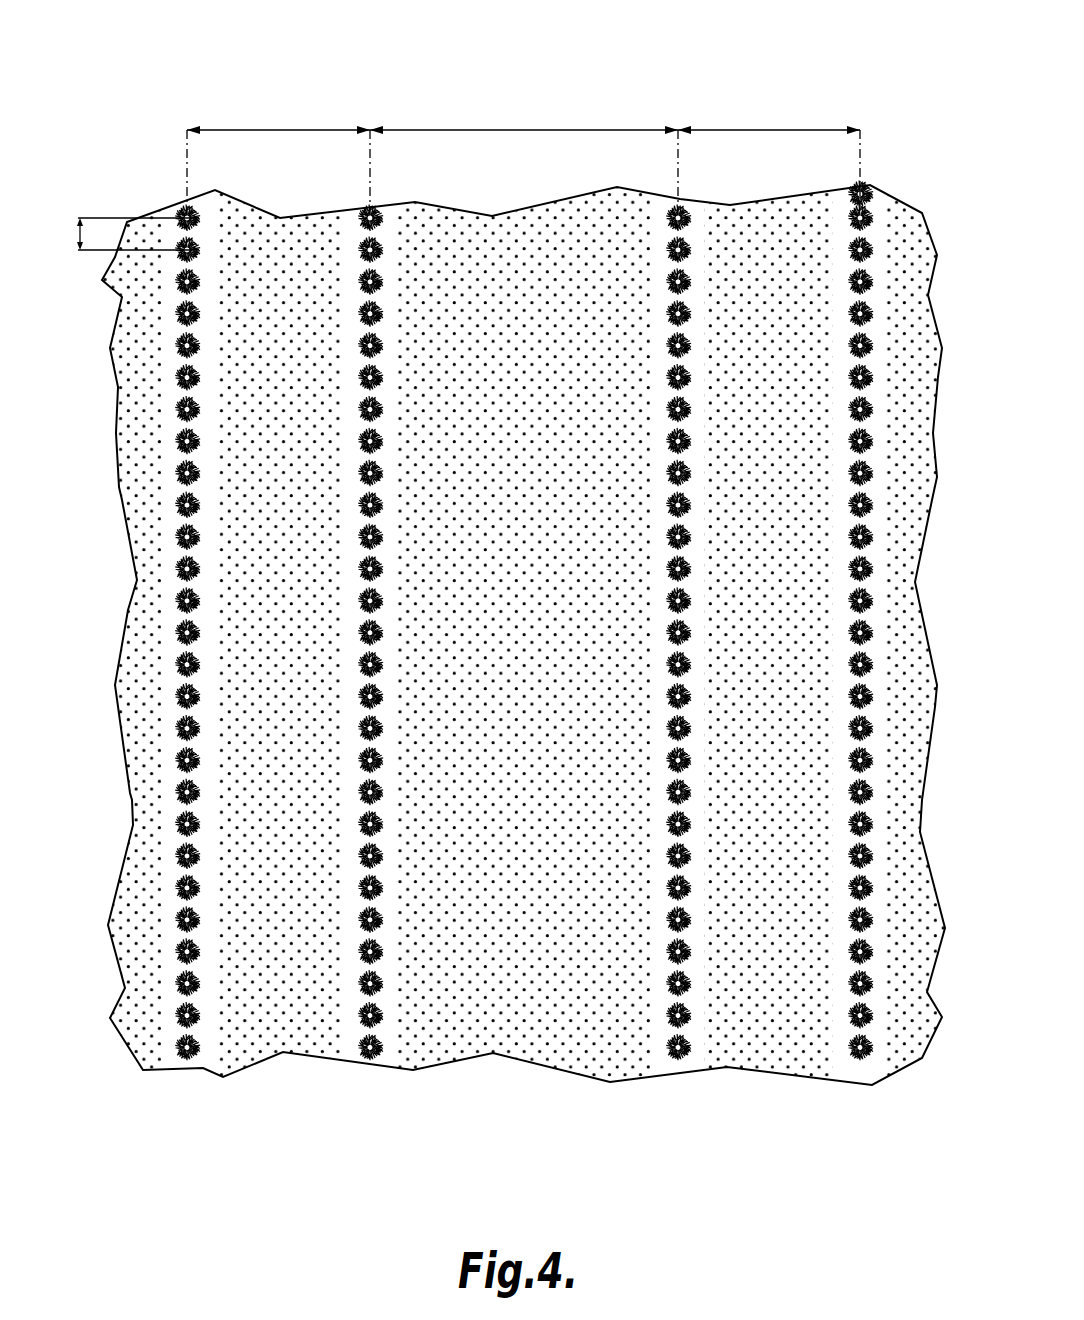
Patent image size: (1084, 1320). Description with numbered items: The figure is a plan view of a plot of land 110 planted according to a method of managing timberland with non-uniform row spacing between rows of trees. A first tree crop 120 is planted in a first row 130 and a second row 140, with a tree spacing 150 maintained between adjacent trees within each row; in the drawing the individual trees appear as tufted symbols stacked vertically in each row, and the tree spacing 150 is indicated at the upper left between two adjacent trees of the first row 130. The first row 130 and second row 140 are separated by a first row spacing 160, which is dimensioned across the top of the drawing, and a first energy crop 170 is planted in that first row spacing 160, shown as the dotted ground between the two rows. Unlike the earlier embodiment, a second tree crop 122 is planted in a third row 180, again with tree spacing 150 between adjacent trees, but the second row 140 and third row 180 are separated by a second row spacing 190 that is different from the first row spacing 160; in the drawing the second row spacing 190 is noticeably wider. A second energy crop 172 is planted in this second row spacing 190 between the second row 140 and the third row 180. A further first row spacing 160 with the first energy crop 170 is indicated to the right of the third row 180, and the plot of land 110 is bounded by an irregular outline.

The plot of land 110 is at (679, 78).
The first tree crop 120 is at (166, 977).
The second tree crop 122 is at (661, 1014).
The first row 130 is at (187, 1068).
The second row 140 is at (370, 1062).
The tree spacing 150 is at (79, 233).
The first row spacing 160 is at (523, 159).
The first energy crop 170 is at (287, 1051).
The second energy crop 172 is at (528, 1058).
The third row 180 is at (678, 1068).
The second row spacing 190 is at (524, 118).